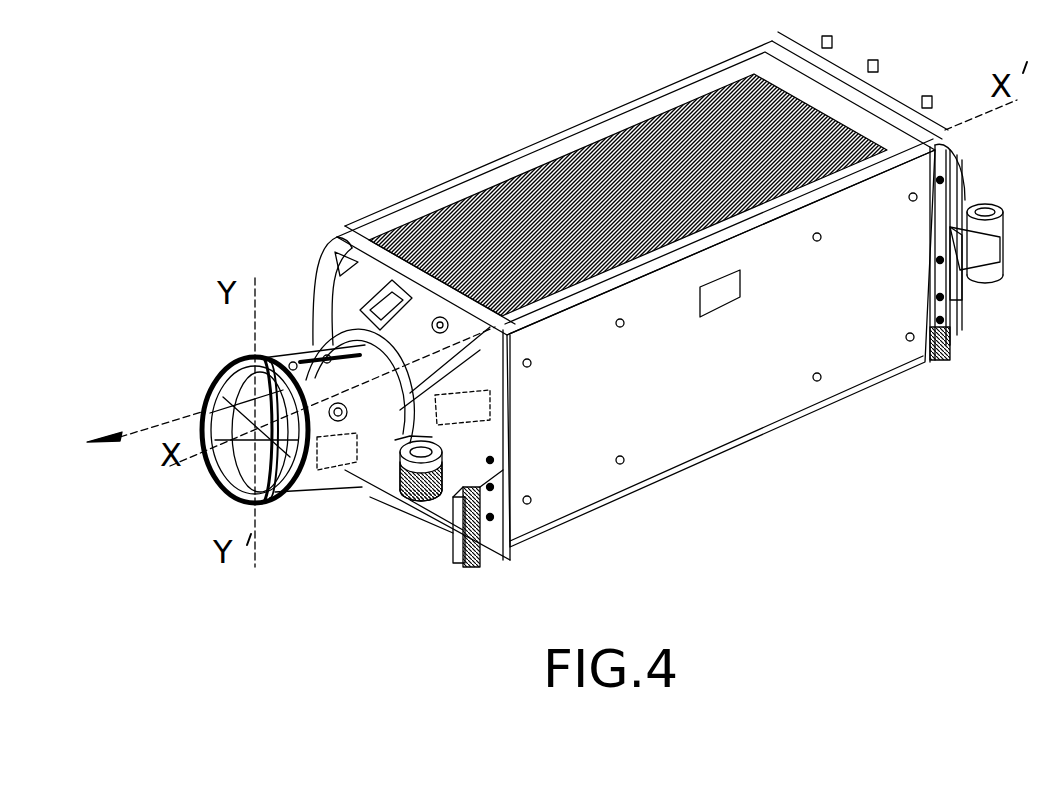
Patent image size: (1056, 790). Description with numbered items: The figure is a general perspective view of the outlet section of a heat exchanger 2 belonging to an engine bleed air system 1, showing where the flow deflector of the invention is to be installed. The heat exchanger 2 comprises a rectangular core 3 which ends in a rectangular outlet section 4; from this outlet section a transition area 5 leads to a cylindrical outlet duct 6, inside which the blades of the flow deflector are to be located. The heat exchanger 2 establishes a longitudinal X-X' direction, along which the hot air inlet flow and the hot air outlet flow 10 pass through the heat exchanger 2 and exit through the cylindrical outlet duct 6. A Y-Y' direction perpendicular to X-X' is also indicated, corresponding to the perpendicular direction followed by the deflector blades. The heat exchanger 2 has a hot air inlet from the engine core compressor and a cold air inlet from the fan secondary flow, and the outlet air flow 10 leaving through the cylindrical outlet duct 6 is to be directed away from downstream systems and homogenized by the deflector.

The engine bleed air system 1 is at (198, 503).
The heat exchanger 2 is at (895, 449).
The rectangular core 3 is at (678, 420).
The rectangular outlet section 4 is at (510, 547).
The transition area 5 is at (322, 268).
The cylindrical outlet duct 6 is at (306, 490).
The outlet air flow 10 is at (218, 366).